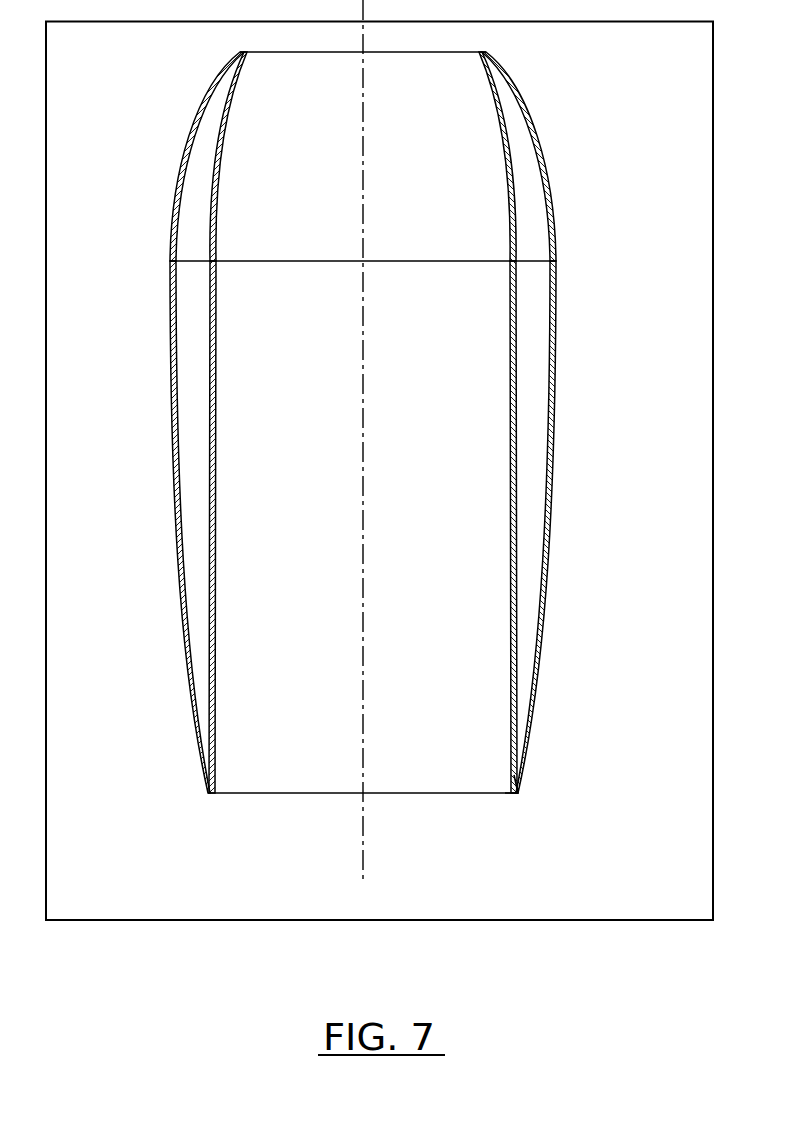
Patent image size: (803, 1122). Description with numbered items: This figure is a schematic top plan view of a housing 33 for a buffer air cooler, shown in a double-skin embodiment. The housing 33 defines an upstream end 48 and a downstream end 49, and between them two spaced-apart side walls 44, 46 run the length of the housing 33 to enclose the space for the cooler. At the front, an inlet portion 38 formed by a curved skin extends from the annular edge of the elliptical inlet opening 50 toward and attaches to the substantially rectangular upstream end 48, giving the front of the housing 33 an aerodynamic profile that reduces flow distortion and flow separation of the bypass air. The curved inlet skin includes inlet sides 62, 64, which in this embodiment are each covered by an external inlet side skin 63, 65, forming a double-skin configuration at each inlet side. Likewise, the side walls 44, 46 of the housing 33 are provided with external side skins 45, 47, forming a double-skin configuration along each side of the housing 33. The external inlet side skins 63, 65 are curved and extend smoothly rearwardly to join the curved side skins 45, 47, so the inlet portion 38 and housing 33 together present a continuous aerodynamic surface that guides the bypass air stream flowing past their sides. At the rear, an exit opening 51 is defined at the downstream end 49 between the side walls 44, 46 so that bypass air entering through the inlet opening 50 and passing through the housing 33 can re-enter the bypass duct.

The housing 33 is at (487, 568).
The inlet portion 38 is at (463, 160).
The side wall 44 is at (215, 497).
The external side skin 45 is at (175, 493).
The side wall 46 is at (510, 490).
The external side skin 47 is at (553, 415).
The upstream end 48 is at (445, 262).
The downstream end 49 is at (516, 794).
The inlet opening 50 is at (428, 52).
The exit opening 51 is at (433, 793).
The inlet side 62 is at (218, 165).
The external inlet side skin 63 is at (177, 172).
The inlet side 64 is at (512, 208).
The external inlet side skin 65 is at (557, 207).